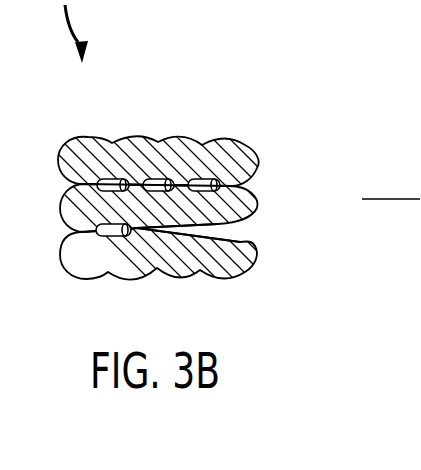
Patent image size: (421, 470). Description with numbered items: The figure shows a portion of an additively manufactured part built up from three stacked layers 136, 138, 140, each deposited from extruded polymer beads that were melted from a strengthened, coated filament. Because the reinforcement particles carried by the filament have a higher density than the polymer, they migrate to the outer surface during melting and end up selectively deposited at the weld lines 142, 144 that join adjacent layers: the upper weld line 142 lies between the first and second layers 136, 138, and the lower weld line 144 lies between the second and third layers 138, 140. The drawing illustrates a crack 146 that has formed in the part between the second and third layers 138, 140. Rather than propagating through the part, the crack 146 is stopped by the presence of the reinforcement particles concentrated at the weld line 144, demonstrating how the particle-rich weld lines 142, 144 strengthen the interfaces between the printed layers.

The layer 136 is at (250, 153).
The layer 138 is at (254, 208).
The layer 140 is at (254, 262).
The weld line 142 is at (246, 174).
The weld line 144 is at (268, 234).
The crack 146 is at (145, 207).